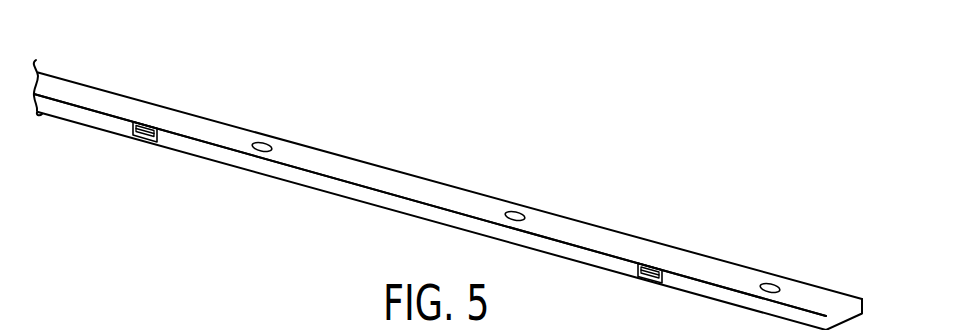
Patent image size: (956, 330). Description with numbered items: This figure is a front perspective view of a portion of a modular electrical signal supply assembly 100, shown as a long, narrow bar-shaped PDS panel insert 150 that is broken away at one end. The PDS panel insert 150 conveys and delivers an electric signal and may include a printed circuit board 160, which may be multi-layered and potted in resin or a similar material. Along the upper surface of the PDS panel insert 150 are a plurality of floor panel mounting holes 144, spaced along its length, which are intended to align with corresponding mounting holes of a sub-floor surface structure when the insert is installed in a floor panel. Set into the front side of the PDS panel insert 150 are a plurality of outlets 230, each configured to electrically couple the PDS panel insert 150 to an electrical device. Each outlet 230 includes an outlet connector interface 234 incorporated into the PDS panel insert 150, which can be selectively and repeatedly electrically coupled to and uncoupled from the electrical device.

The modular electrical signal supply assembly 100 is at (448, 165).
The PDS panel insert 150 is at (207, 115).
The printed circuit board 160 is at (359, 190).
The floor panel mounting holes 144 is at (263, 141).
The outlet 230 is at (394, 226).
The outlet connector interface 234 is at (142, 139).